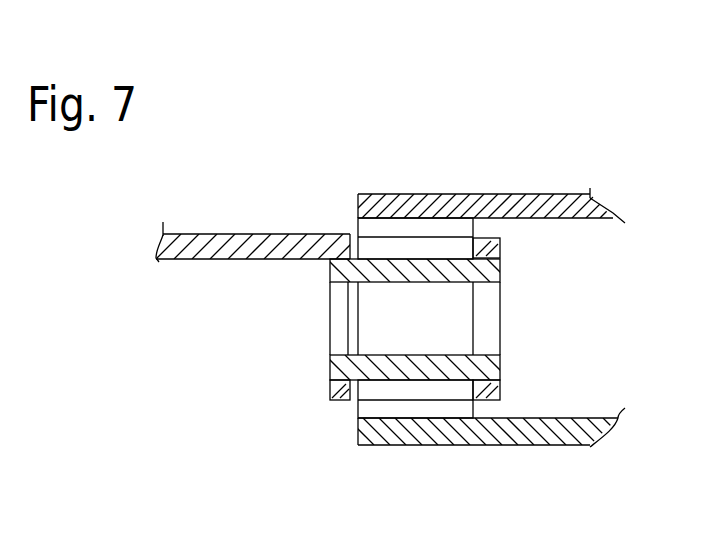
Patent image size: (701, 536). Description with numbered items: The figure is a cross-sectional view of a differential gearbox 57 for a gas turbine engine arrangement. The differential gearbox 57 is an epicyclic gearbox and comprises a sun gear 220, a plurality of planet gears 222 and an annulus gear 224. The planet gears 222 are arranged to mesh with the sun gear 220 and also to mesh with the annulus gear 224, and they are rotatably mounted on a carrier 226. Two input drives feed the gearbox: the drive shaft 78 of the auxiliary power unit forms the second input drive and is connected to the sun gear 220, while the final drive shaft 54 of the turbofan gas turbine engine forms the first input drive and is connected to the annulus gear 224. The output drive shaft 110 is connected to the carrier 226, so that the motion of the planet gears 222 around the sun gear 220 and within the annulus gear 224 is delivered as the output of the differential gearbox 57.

The differential gearbox 57 is at (416, 287).
The final drive shaft 54 is at (558, 193).
The output drive shaft 110 is at (213, 235).
The annulus gear 224 is at (388, 230).
The planet gears 222 is at (497, 252).
The carrier 226 is at (330, 389).
The drive shaft 78 is at (598, 418).
The sun gear 220 is at (400, 410).